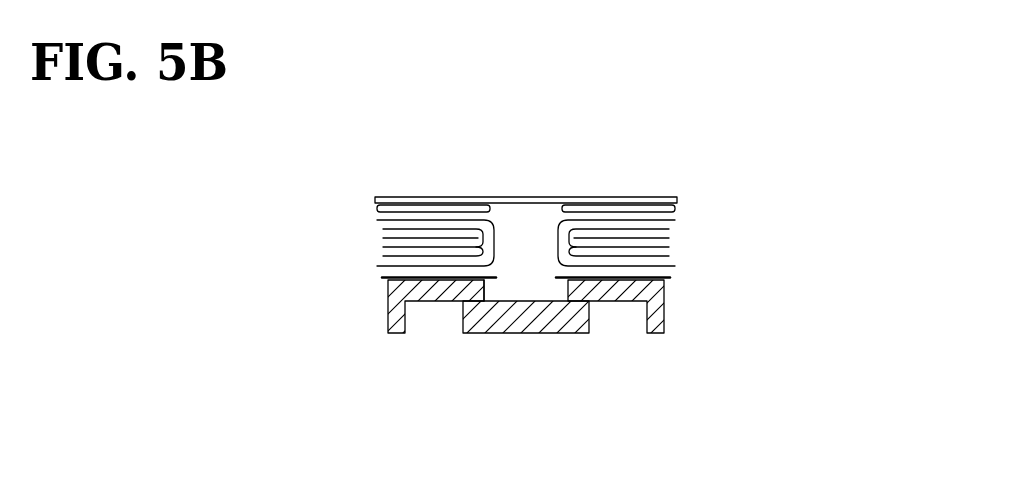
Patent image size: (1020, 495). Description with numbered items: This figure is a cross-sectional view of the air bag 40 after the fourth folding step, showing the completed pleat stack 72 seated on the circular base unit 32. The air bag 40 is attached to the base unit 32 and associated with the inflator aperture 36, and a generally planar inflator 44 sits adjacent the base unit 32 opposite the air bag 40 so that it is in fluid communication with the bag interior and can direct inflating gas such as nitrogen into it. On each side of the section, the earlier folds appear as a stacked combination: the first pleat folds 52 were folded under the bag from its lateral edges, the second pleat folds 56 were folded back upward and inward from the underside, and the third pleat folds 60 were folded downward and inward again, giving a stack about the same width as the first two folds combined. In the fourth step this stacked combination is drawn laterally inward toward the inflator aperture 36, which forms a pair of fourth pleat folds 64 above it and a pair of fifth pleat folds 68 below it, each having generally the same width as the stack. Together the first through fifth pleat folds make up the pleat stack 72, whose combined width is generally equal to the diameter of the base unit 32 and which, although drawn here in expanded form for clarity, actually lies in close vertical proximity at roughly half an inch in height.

The pleat stack 72 is at (541, 153).
The air bag 40 is at (547, 197).
The fourth pleat folds 64 is at (377, 209).
The third pleat folds 60 is at (380, 232).
The second pleat folds 56 is at (380, 251).
The first pleat folds 52 is at (382, 279).
The fifth pleat folds 68 is at (386, 282).
The base unit 32 is at (610, 290).
The inflator 44 is at (533, 322).
The inflator aperture 36 is at (483, 284).